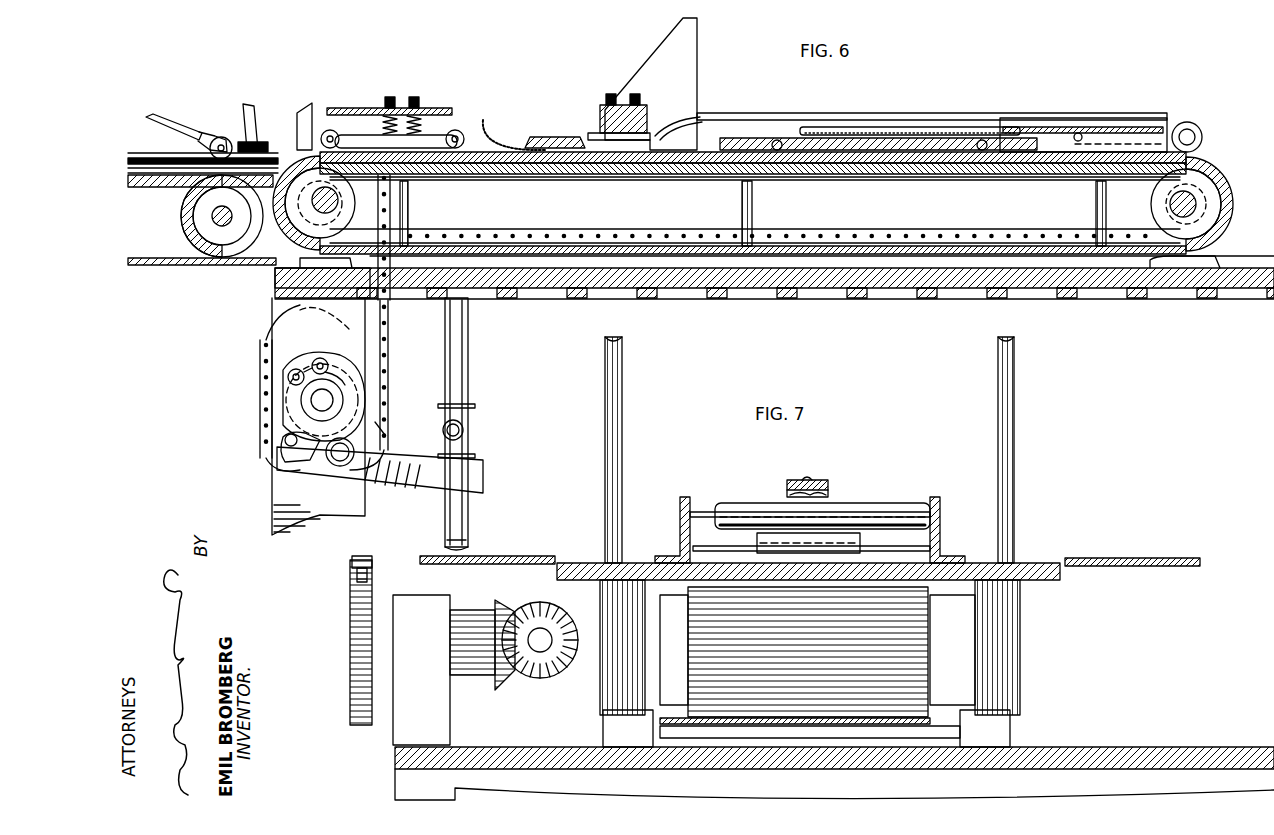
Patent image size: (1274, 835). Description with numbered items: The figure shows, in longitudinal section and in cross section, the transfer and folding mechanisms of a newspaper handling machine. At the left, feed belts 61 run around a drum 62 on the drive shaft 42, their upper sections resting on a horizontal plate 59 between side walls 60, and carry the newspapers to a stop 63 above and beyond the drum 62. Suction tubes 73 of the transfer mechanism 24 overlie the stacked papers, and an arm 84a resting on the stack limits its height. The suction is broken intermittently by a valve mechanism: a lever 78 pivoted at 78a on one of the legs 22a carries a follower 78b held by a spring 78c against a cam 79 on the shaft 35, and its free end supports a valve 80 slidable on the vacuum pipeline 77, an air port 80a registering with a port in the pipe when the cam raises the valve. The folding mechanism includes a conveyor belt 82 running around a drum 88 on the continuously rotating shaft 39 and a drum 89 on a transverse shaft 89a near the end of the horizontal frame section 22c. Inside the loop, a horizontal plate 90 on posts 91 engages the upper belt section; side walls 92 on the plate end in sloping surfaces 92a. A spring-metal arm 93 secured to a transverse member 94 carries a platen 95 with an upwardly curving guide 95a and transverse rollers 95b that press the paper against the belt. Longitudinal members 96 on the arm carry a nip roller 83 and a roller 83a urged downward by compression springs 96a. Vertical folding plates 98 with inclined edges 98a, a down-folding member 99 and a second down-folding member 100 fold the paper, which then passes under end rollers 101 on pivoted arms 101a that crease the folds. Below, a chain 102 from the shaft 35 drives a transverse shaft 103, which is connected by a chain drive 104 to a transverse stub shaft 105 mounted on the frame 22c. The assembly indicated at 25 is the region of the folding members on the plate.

In FIG. 6, the leg 22a is at (290, 502).
In FIG. 6, the horizontal frame section 22c is at (711, 290).
In FIG. 7, the horizontal frame section 22c is at (1115, 745).
In FIG. 6, the transfer mechanism 24 is at (276, 85).
In FIG. 6, the holding assembly 25 is at (994, 96).
In FIG. 7, the holding assembly 25 is at (882, 443).
In FIG. 6, the shaft 35 is at (318, 400).
In FIG. 6, the continuously rotating shaft 39 is at (316, 206).
In FIG. 6, the drive shaft 42 is at (216, 226).
In FIG. 6, the horizontal plate 59 is at (147, 185).
In FIG. 6, the side wall 60 is at (140, 165).
In FIG. 6, the endless belt 61 is at (147, 266).
In FIG. 6, the drum 62 is at (225, 252).
In FIG. 6, the stop 63 is at (300, 150).
In FIG. 6, the suction tube 73 is at (245, 110).
In FIG. 6, the vacuum pipeline 77 is at (470, 540).
In FIG. 6, the lever 78 is at (395, 485).
In FIG. 6, the pivot 78a is at (338, 465).
In FIG. 6, the roller or follower 78b is at (280, 448).
In FIG. 6, the spring 78c is at (380, 428).
In FIG. 6, the cam 79 is at (300, 365).
In FIG. 6, the valve 80 is at (470, 415).
In FIG. 6, the air port 80a is at (465, 430).
In FIG. 6, the conveyor belt 82 is at (312, 150).
In FIG. 7, the conveyor belt 82 is at (930, 555).
In FIG. 6, the nip roller 83 is at (338, 132).
In FIG. 6, the roller 83a is at (458, 130).
In FIG. 6, the arm 84a is at (175, 125).
In FIG. 6, the drum 88 is at (396, 188).
In FIG. 6, the drum 89 is at (1222, 222).
In FIG. 7, the drum 89 is at (915, 640).
In FIG. 6, the transverse shaft 89a is at (1190, 196).
In FIG. 7, the horizontal plate 90 is at (1060, 578).
In FIG. 6, the post 91 is at (409, 213).
In FIG. 7, the post 91 is at (600, 598).
In FIG. 6, the side wall 92 is at (860, 113).
In FIG. 7, the side wall 92 is at (680, 510).
In FIG. 6, the sloping surface 92a is at (690, 133).
In FIG. 6, the arm 93 is at (505, 112).
In FIG. 7, the arm 93 is at (800, 480).
In FIG. 6, the transverse member 94 is at (343, 108).
In FIG. 6, the platen 95 is at (922, 138).
In FIG. 7, the platen 95 is at (890, 525).
In FIG. 6, the guide 95a is at (520, 140).
In FIG. 7, the guide 95a is at (700, 541).
In FIG. 6, the transverse roller 95b is at (572, 152).
In FIG. 7, the transverse roller 95b is at (850, 535).
In FIG. 6, the longitudinal member 96 is at (432, 135).
In FIG. 6, the compression spring 96a is at (413, 97).
In FIG. 6, the vertical folding plate 98 is at (652, 72).
In FIG. 6, the inclined edge 98a is at (612, 104).
In FIG. 7, the inclined edge 98a is at (623, 400).
In FIG. 6, the down-folding member 99 is at (787, 127).
In FIG. 7, the down-folding member 99 is at (700, 512).
In FIG. 6, the second down-folding member 100 is at (1055, 127).
In FIG. 6, the end roller 101 is at (1188, 122).
In FIG. 6, the arm 101a is at (1120, 143).
In FIG. 6, the chain 102 is at (390, 355).
In FIG. 6, the transverse shaft 103 is at (330, 312).
In FIG. 6, the chain drive 104 is at (681, 233).
In FIG. 6, the transverse stub shaft 105 is at (1164, 264).